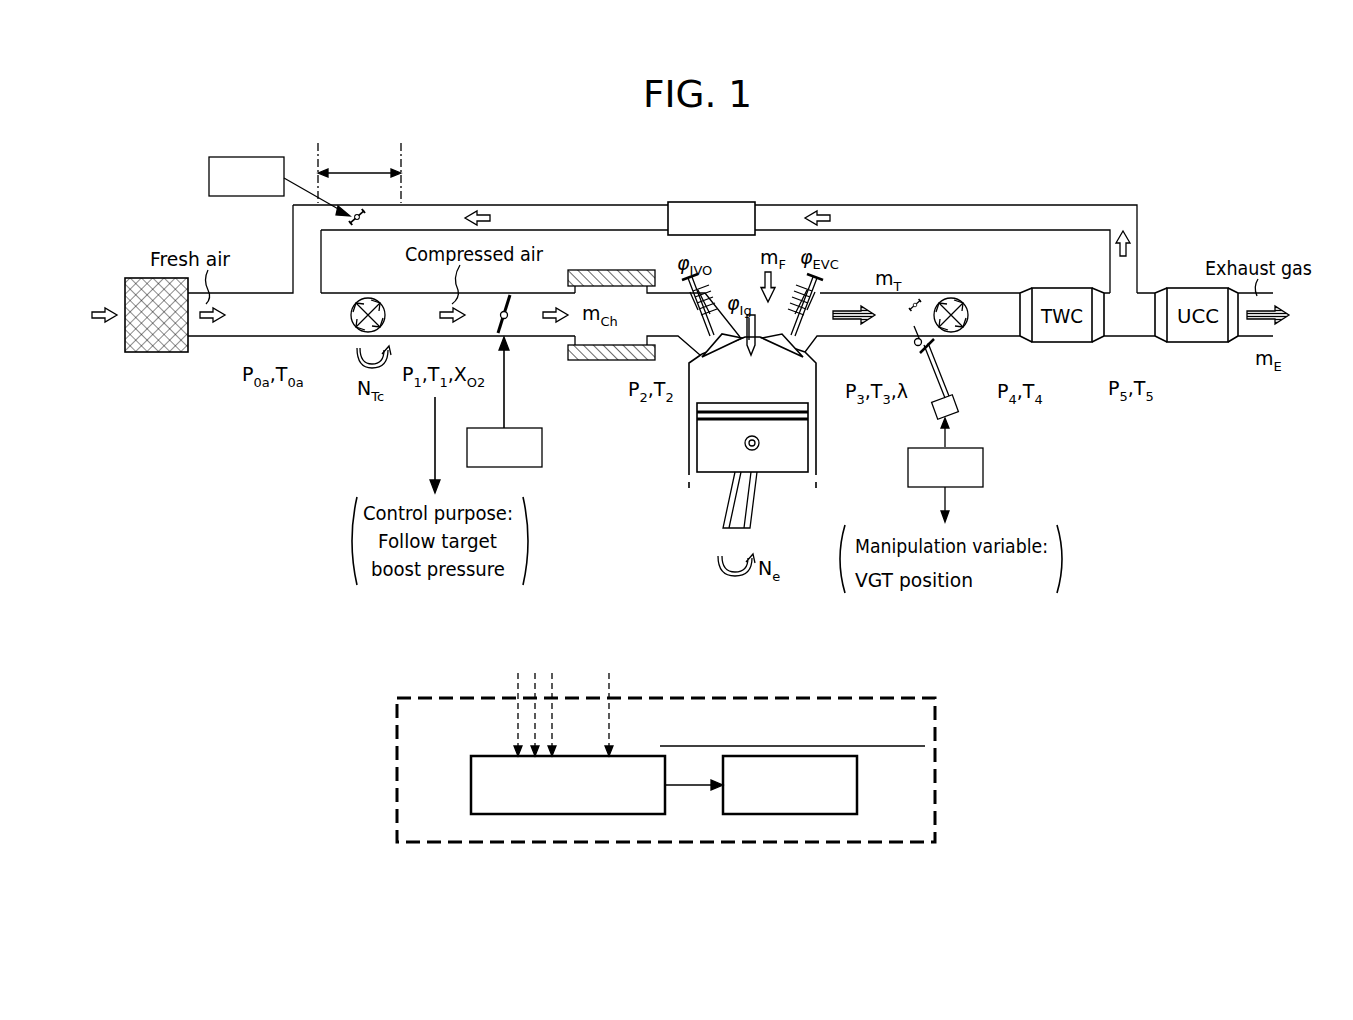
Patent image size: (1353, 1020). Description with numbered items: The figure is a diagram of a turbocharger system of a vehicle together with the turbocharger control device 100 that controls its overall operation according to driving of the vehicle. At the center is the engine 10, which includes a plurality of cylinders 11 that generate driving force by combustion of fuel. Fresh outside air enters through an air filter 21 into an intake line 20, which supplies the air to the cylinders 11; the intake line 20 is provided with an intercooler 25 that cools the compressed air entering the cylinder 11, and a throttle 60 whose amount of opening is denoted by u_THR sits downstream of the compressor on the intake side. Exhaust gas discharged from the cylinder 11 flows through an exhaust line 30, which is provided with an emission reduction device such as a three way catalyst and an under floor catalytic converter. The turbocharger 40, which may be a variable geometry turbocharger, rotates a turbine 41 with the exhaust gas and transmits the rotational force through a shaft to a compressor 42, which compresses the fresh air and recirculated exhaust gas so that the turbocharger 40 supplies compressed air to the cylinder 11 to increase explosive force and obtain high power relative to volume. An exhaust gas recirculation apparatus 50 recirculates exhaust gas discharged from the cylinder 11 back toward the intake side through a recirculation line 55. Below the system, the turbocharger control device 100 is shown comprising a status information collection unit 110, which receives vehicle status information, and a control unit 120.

The engine 10 is at (728, 431).
The cylinder 11 is at (695, 507).
The intake line 20 is at (255, 293).
The air filter 21 is at (157, 354).
The intercooler 25 is at (592, 362).
The exhaust line 30 is at (1003, 292).
The turbocharger 40 is at (228, 476).
The turbine 41 is at (356, 327).
The compressor 42 is at (951, 333).
The exhaust gas recirculation apparatus 50 is at (710, 202).
The recirculation line 55 is at (970, 205).
The throttle 60 is at (507, 318).
The turbocharger control device 100 is at (666, 742).
The status information collection unit 110 is at (471, 793).
The control unit 120 is at (857, 793).